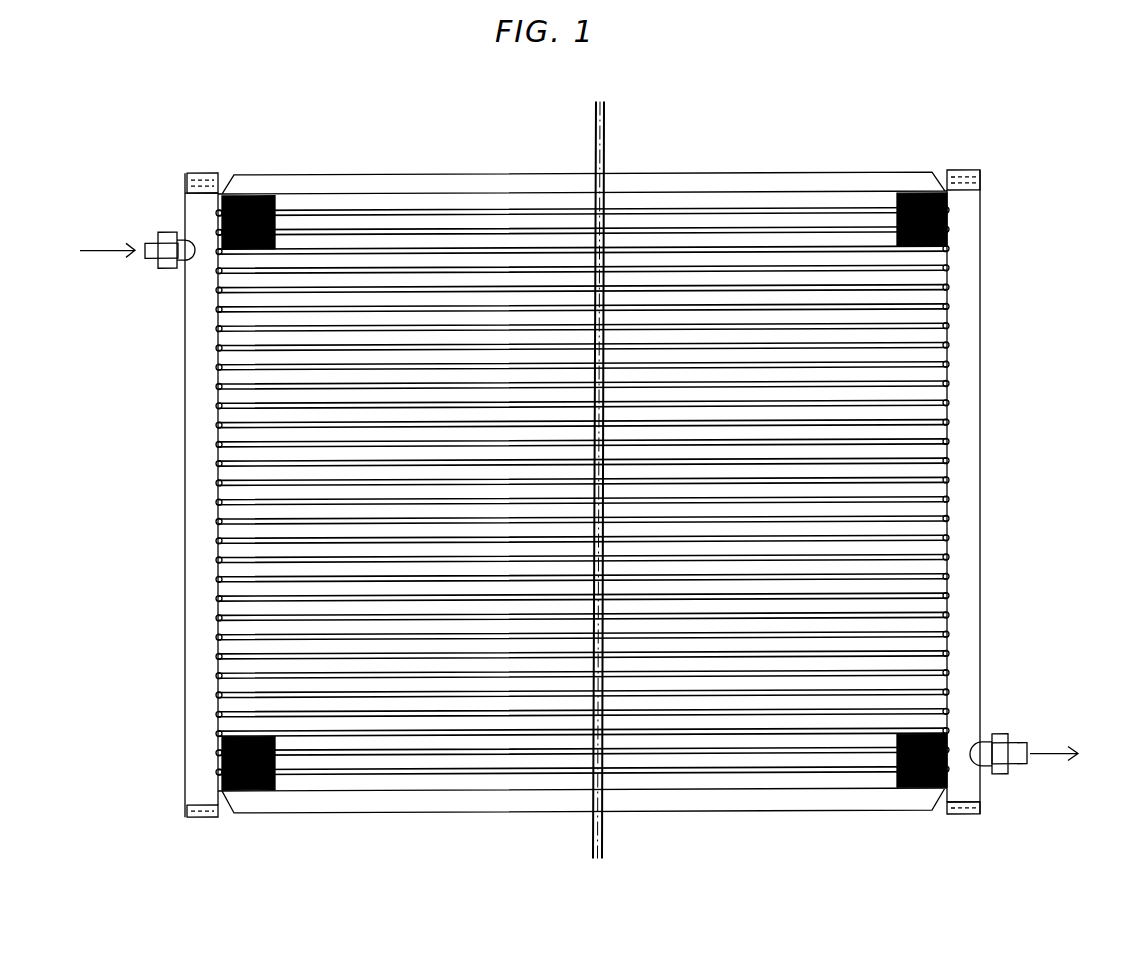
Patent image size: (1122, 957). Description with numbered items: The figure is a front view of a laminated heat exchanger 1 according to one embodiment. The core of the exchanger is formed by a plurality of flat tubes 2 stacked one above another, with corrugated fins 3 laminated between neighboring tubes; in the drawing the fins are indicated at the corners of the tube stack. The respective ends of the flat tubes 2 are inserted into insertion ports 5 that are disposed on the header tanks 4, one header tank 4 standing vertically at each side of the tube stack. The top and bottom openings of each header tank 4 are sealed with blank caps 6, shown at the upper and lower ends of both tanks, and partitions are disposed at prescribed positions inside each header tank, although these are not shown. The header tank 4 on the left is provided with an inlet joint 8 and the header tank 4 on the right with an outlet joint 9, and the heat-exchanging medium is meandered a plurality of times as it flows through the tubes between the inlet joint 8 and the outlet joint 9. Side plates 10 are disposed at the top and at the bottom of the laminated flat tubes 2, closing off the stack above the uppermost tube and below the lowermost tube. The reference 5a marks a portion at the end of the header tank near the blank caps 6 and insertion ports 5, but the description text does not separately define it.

The laminated heat exchanger 1 is at (289, 150).
The flat tubes 2 is at (447, 212).
The corrugated fins 3 is at (274, 226).
The header tanks 4 is at (197, 437).
The insertion ports 5 is at (218, 315).
The end joint portion 5a is at (185, 193).
The blank caps 6 is at (206, 180).
The inlet joint 8 is at (157, 233).
The outlet joint 9 is at (1012, 742).
The side plates 10 is at (525, 176).